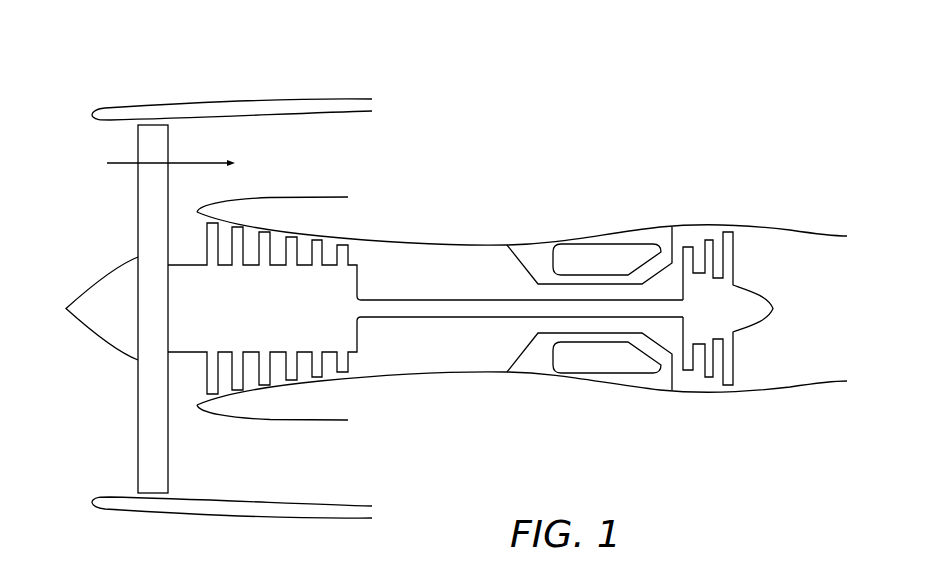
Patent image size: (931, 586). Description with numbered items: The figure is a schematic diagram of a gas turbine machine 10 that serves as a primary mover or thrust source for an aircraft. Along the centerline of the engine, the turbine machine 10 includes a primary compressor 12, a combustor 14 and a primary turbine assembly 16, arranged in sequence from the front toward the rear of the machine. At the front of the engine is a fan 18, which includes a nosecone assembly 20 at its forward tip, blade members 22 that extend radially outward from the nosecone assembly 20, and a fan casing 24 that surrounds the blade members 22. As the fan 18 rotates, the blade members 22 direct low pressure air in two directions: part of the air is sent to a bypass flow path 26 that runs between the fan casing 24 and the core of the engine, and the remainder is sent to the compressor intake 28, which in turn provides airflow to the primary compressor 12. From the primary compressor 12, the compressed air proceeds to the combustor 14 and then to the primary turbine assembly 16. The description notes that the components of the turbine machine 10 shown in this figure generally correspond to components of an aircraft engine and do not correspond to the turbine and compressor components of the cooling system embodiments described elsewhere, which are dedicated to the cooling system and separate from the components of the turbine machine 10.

The gas turbine machine 10 is at (603, 132).
The primary compressor 12 is at (297, 298).
The combustor 14 is at (597, 257).
The primary turbine assembly 16 is at (722, 308).
The fan 18 is at (78, 191).
The nosecone assembly 20 is at (102, 325).
The blade members 22 is at (155, 475).
The fan casing 24 is at (237, 108).
The bypass flow path 26 is at (202, 162).
The compressor intake 28 is at (197, 246).